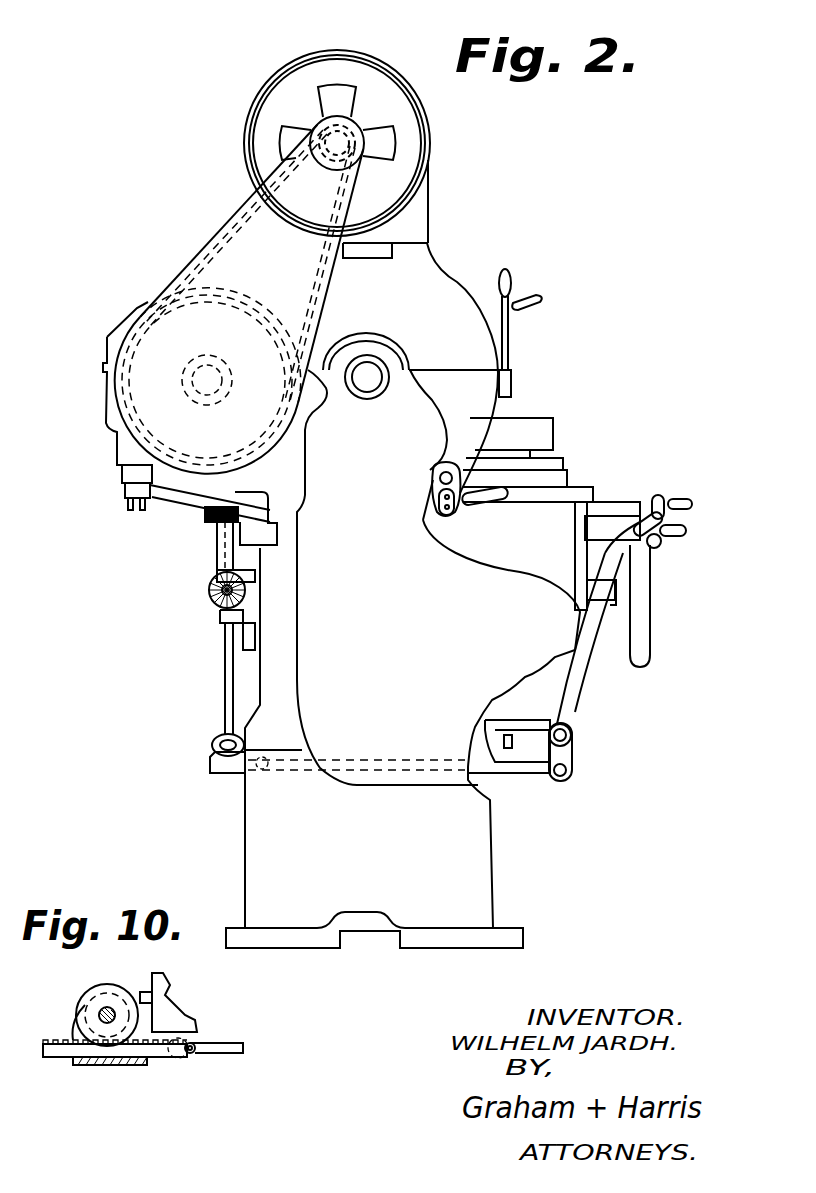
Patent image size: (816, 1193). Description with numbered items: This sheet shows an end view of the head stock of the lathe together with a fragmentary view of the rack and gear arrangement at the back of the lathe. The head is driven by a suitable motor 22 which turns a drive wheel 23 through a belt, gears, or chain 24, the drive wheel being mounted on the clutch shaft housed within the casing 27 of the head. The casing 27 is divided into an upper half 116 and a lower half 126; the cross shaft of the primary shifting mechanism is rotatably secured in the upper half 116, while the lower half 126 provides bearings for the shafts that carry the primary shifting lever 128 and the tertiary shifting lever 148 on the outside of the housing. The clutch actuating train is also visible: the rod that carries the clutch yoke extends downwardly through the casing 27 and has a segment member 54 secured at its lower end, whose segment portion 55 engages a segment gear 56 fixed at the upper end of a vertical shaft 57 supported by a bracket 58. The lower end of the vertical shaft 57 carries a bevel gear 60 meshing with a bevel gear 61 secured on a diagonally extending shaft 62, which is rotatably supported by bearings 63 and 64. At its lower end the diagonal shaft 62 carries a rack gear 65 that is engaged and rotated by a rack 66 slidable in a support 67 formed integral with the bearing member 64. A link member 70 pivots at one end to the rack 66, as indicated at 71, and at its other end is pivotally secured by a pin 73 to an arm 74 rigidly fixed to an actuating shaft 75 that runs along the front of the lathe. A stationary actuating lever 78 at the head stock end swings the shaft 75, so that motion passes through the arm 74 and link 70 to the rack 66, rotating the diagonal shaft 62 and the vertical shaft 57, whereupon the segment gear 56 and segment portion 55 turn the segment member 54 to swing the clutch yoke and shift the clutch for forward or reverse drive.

In FIG. 2, the motor 22 is at (386, 110).
In FIG. 2, the belt, gears, or chain 24 is at (228, 232).
In FIG. 2, the drive wheel 23 is at (138, 410).
In FIG. 2, the upper half of the housing 116 is at (433, 283).
In FIG. 2, the primary shifting lever 128 is at (512, 282).
In FIG. 2, the tertiary shifting lever 148 is at (530, 308).
In FIG. 2, the lower half of the housing 126 is at (508, 400).
In FIG. 2, the casing of the head 27 is at (511, 421).
In FIG. 2, the segment member 54 is at (176, 500).
In FIG. 2, the segment portion 55 is at (218, 525).
In FIG. 2, the segment gear 56 is at (218, 545).
In FIG. 2, the vertical shaft 57 is at (222, 565).
In FIG. 2, the bracket 58 is at (245, 540).
In FIG. 2, the bevel gear 61 is at (248, 596).
In FIG. 2, the bearing 63 is at (255, 658).
In FIG. 2, the bevel gear 60 is at (225, 640).
In FIG. 2, the diagonally extending shaft 62 is at (213, 746).
In FIG. 10, the diagonally extending shaft 62 is at (109, 1012).
In FIG. 2, the rack gear 65 is at (224, 776).
In FIG. 10, the rack gear 65 is at (93, 997).
In FIG. 2, the link member 70 is at (521, 775).
In FIG. 10, the link member 70 is at (235, 1050).
In FIG. 2, the arm 74 is at (578, 758).
In FIG. 2, the actuating shaft 75 is at (572, 733).
In FIG. 2, the pin 73 is at (577, 776).
In FIG. 2, the stationary actuating lever 78 is at (572, 685).
In FIG. 10, the bearing member 64 is at (145, 1020).
In FIG. 10, the rack 66 is at (98, 1053).
In FIG. 10, the support 67 is at (77, 1064).
In FIG. 10, the pivot 71 is at (192, 1055).